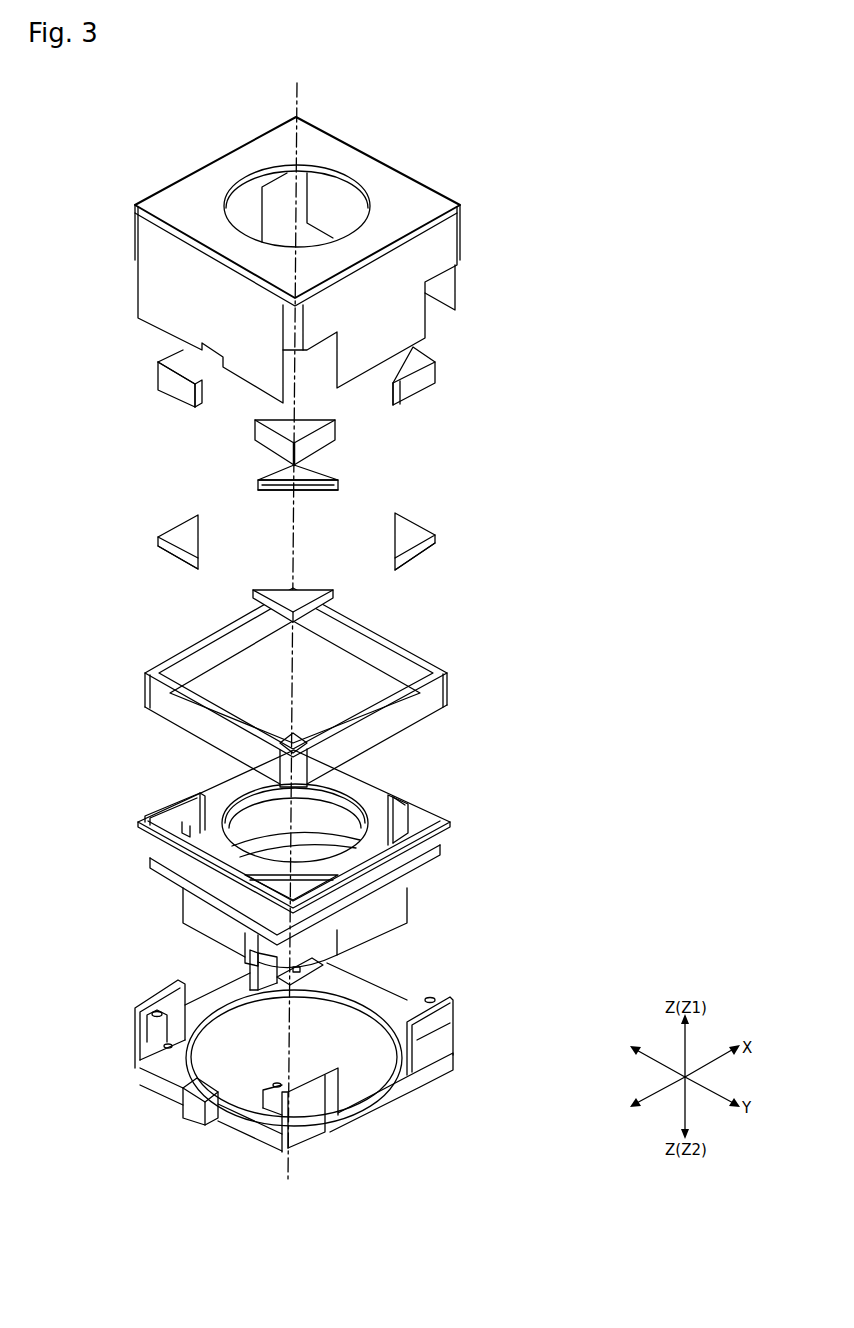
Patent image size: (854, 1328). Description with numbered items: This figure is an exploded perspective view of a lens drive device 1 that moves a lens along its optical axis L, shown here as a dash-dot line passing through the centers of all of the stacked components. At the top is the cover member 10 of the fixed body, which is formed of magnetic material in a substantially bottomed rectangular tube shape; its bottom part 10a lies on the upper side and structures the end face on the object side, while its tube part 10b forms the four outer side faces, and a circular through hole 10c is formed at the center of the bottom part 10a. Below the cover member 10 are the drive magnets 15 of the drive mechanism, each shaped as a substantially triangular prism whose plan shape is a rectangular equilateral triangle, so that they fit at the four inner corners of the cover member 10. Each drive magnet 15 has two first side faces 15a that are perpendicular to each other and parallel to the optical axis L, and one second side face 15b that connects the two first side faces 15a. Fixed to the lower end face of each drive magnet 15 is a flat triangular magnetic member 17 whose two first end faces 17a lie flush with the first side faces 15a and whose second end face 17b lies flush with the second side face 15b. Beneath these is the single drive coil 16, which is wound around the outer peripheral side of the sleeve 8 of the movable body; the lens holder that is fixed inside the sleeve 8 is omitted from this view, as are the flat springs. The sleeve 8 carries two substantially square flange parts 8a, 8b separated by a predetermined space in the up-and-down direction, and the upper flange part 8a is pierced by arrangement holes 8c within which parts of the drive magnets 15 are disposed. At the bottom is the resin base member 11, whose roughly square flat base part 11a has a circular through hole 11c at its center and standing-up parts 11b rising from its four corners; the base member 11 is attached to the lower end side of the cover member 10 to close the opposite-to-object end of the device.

The lens drive device 1 is at (603, 160).
The optical axis L is at (319, 631).
The cover member 10 is at (321, 260).
The bottom part 10a is at (415, 214).
The tube part 10b is at (216, 304).
The circular through hole 10c is at (328, 168).
The drive magnet 15 is at (157, 375).
The first side face 15a is at (177, 392).
The second side face 15b is at (200, 396).
The magnetic member 17 is at (327, 469).
The first end face 17a is at (173, 552).
The second end face 17b is at (278, 488).
The drive coil 16 is at (447, 693).
The sleeve 8 is at (319, 835).
The flange part 8a is at (450, 822).
The flange part 8b is at (442, 847).
The arrangement hole 8c is at (307, 740).
The base member 11 is at (291, 1052).
The base part 11a is at (385, 1090).
The standing-up part 11b is at (250, 973).
The circular through hole 11c is at (342, 1005).